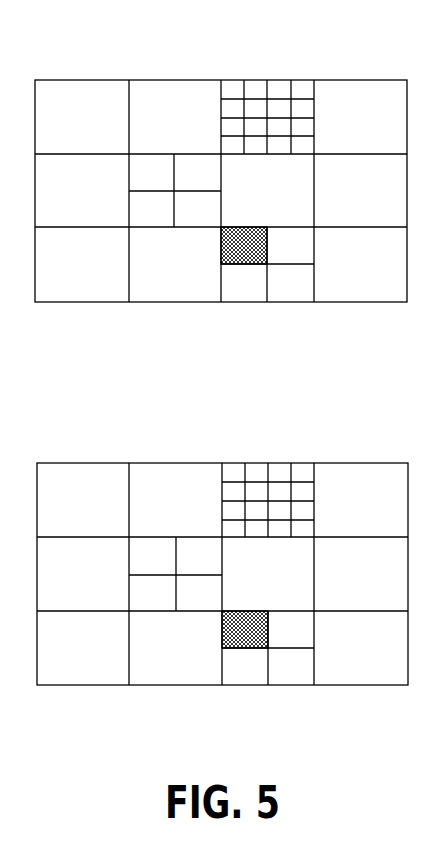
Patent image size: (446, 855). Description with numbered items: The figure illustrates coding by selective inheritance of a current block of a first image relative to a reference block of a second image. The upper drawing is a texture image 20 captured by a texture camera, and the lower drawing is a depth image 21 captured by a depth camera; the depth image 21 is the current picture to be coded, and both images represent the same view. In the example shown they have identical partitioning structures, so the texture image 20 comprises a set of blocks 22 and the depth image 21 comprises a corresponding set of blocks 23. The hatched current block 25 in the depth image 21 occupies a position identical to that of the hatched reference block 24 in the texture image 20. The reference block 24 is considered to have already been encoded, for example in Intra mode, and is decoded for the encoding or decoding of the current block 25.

The texture image 20 is at (364, 79).
The depth image 21 is at (364, 462).
The set of blocks 22 is at (232, 88).
The corresponding set of blocks 23 is at (233, 473).
The reference block 24 is at (243, 250).
The current block 25 is at (247, 637).